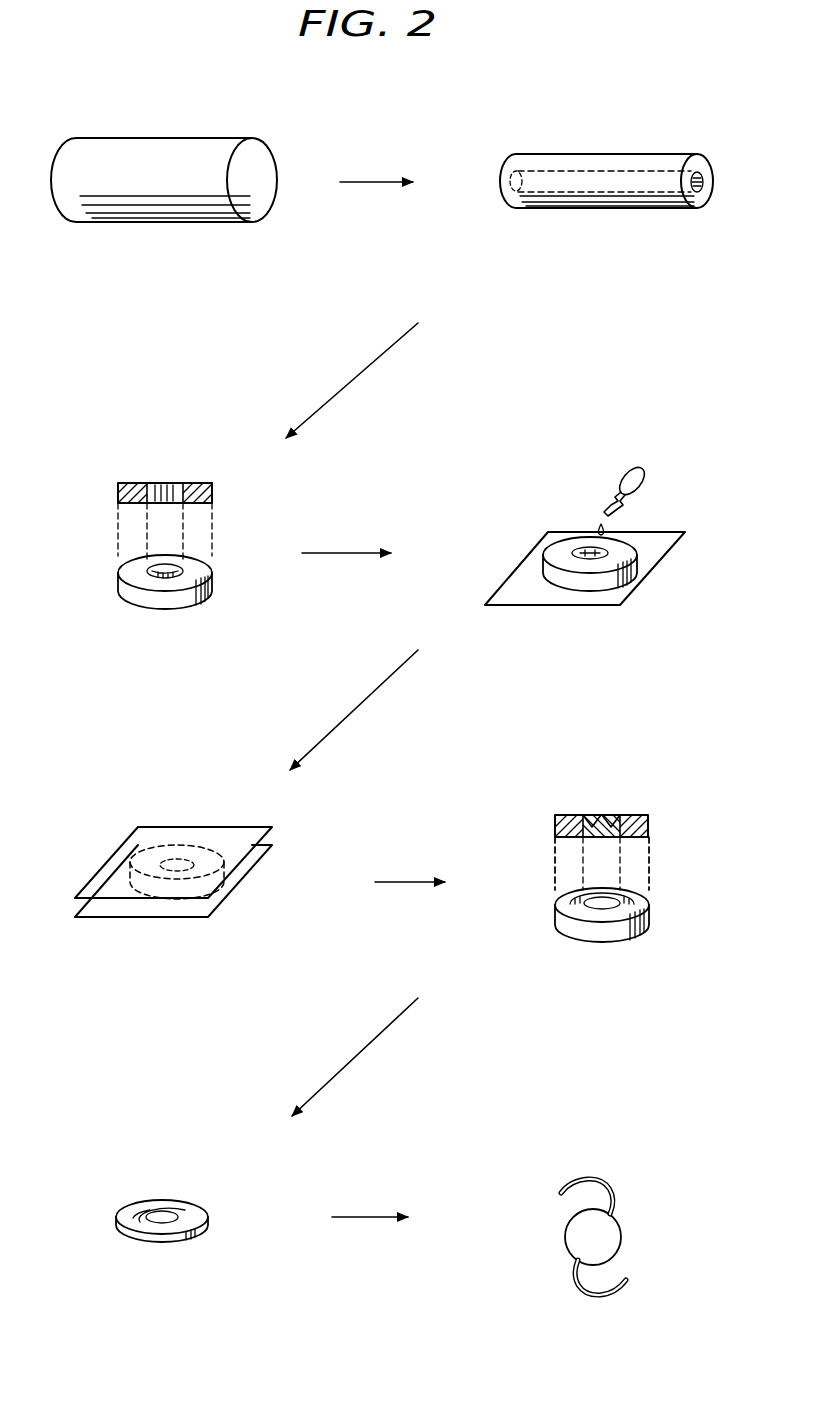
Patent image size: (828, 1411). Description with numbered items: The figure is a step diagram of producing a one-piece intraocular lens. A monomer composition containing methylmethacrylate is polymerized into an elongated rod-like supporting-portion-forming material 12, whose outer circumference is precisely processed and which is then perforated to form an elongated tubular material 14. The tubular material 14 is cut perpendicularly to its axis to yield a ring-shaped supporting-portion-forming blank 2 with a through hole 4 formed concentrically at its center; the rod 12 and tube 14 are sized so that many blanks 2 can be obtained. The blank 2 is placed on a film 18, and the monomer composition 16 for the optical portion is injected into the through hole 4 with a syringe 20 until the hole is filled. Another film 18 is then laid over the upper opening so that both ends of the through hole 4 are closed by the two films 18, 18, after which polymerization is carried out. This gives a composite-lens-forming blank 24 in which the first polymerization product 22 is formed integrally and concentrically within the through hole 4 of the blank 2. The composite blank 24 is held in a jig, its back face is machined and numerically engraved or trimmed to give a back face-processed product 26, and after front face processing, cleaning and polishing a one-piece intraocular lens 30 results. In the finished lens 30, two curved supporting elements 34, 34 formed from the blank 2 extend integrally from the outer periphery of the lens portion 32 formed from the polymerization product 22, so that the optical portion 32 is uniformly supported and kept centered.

The supporting-portion-forming material 12 is at (175, 118).
The tubular material 14 is at (621, 142).
The supporting-portion-forming blank 2 is at (109, 488).
The through hole 4 is at (151, 486).
The monomer composition 16 is at (586, 545).
The film 18 is at (510, 591).
The syringe 20 is at (641, 477).
The first polymerization product 22 is at (599, 815).
The composite-lens-forming blank 24 is at (665, 822).
The back face-processed product 26 is at (151, 1189).
The intraocular lens 30 is at (563, 1253).
The lens portion 32 is at (575, 1245).
The supporting element 34 is at (590, 1182).